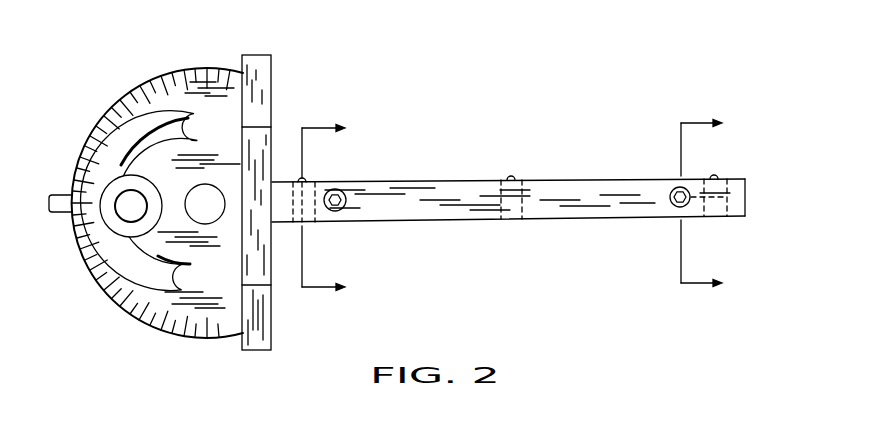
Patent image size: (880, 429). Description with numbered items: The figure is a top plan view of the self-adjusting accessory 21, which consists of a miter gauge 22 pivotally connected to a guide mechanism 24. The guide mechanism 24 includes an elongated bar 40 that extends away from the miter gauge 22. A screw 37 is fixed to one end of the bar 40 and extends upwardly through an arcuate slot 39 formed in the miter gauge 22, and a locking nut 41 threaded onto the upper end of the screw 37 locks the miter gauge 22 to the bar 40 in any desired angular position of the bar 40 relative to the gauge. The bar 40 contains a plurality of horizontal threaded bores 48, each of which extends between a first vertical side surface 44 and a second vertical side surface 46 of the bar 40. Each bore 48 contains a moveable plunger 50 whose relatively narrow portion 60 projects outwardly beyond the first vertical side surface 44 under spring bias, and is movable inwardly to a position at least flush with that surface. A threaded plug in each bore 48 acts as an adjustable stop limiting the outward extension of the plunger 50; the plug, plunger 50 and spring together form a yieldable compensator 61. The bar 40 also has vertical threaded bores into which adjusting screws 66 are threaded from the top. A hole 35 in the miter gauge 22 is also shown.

The self-adjusting accessory 21 is at (443, 129).
The miter gauge 22 is at (190, 80).
The guide mechanism 24 is at (576, 158).
The hole 35 is at (205, 190).
The screw 37 is at (127, 203).
The arcuate slot 39 is at (132, 263).
The elongated bar 40 is at (638, 210).
The locking nut 41 is at (115, 222).
The first vertical side surface 44 is at (407, 181).
The second vertical side surface 46 is at (460, 220).
The horizontal threaded bore 48 is at (315, 213).
The moveable plunger 50 is at (326, 174).
The relatively narrow portion 60 is at (303, 178).
The yieldable compensator 61 is at (501, 139).
The adjusting screw 66 is at (340, 203).